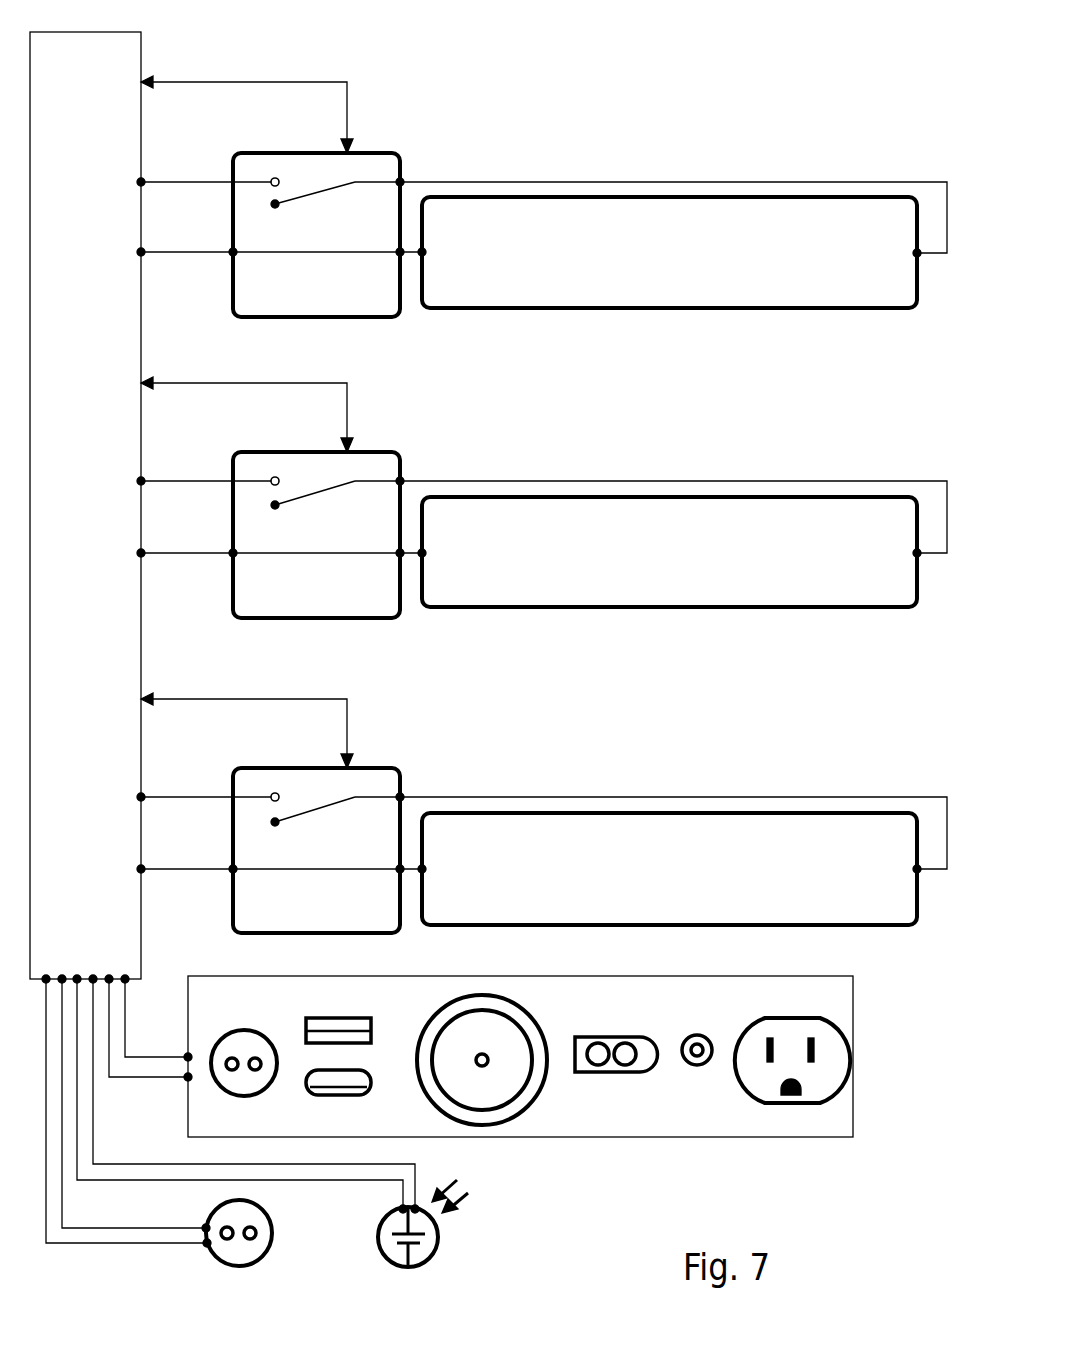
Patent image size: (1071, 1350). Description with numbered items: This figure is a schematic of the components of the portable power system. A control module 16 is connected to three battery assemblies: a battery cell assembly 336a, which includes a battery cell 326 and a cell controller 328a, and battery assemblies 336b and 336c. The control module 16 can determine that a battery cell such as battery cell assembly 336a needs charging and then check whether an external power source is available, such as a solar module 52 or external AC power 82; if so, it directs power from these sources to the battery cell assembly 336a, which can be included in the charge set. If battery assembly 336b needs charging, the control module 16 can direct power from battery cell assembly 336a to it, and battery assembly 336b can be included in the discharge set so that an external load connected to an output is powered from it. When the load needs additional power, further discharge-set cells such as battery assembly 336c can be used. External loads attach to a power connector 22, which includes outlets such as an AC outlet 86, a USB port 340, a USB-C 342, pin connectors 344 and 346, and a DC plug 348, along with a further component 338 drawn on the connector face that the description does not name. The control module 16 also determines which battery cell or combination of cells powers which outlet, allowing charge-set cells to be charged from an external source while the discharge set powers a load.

The control module 16 is at (141, 53).
The cell controller 328a is at (313, 153).
The battery cell assembly 336a is at (542, 207).
The battery assembly 336b is at (695, 468).
The battery assembly 336c is at (700, 780).
The battery cell 326 is at (822, 310).
The power connector 22 is at (825, 977).
The pin connector 344 is at (260, 1032).
The USB port 340 is at (371, 1030).
The USB-C 342 is at (371, 1080).
The speaker 338 is at (530, 1018).
The pin connector 346 is at (633, 1035).
The DC plug 348 is at (705, 1035).
The AC outlet 86 is at (843, 1058).
The external AC power 82 is at (273, 1233).
The solar module 52 is at (436, 1258).